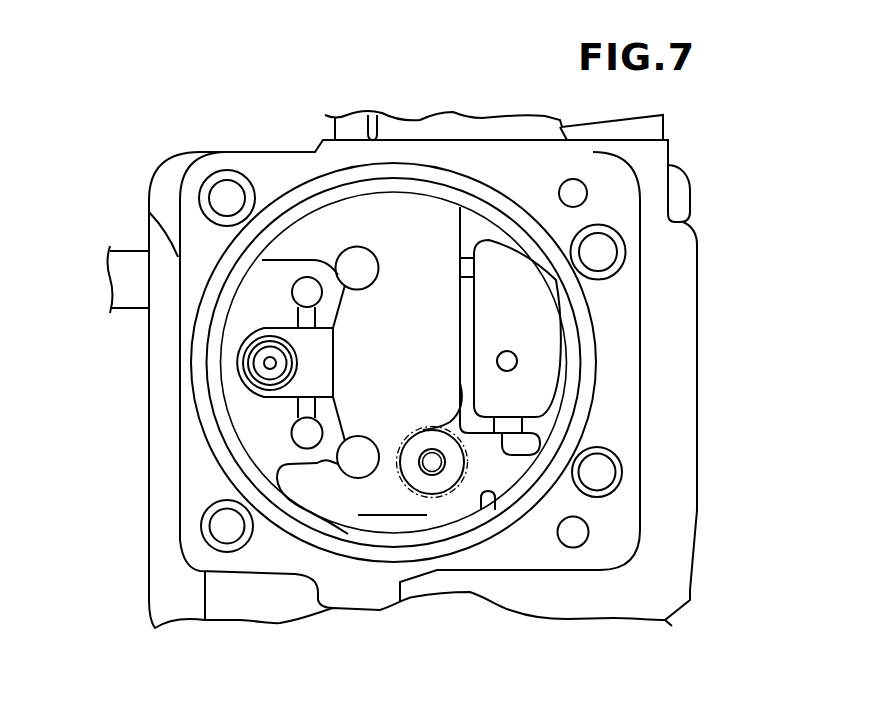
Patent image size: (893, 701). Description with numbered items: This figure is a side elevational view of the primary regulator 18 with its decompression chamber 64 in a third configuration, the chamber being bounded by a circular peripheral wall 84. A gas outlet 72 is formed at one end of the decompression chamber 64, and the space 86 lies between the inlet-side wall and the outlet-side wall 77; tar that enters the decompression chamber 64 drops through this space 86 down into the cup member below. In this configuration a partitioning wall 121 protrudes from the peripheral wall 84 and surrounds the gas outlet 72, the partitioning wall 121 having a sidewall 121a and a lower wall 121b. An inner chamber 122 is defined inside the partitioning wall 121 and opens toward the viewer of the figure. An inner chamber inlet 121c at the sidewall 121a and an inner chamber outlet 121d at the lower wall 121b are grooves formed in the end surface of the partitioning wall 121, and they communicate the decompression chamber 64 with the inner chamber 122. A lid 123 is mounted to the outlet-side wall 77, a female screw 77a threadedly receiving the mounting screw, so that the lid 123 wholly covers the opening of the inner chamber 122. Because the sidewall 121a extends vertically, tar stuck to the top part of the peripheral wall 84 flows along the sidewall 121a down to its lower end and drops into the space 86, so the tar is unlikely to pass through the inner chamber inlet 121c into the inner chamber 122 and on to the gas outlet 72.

The primary regulator 18 is at (111, 177).
The decompression chamber 64 is at (316, 226).
The gas outlet 72 is at (509, 352).
The outlet-side wall 77 is at (425, 485).
The female screw 77a is at (433, 470).
The peripheral wall 84 is at (455, 447).
The space 86 is at (398, 400).
The partitioning wall 121 is at (437, 233).
The sidewall 121a is at (457, 267).
The lower wall 121b is at (502, 435).
The inner chamber inlet 121c is at (457, 317).
The inner chamber outlet 121d is at (473, 430).
The inner chamber 122 is at (507, 305).
The lid 123 is at (470, 463).